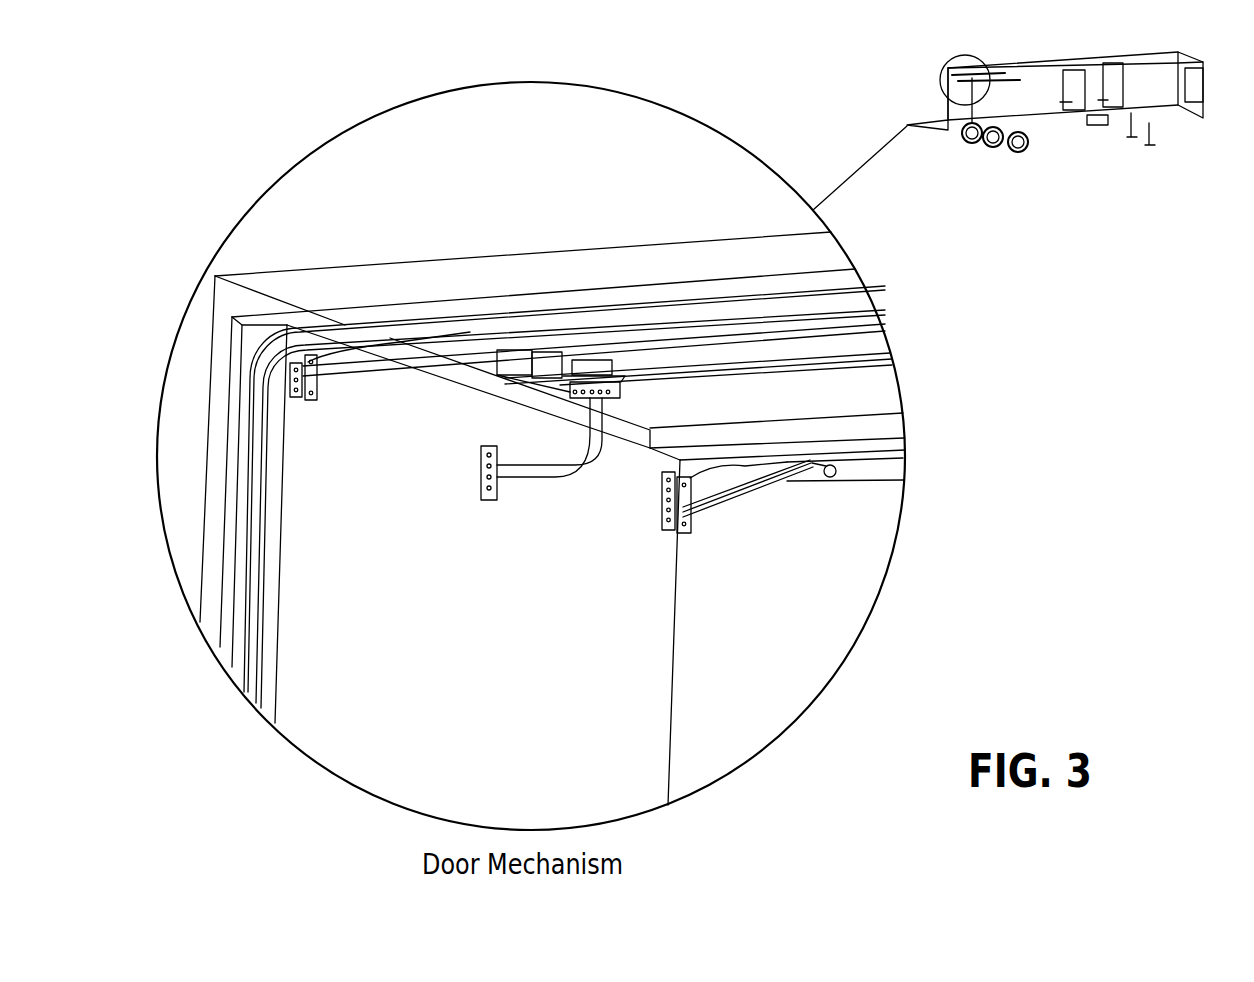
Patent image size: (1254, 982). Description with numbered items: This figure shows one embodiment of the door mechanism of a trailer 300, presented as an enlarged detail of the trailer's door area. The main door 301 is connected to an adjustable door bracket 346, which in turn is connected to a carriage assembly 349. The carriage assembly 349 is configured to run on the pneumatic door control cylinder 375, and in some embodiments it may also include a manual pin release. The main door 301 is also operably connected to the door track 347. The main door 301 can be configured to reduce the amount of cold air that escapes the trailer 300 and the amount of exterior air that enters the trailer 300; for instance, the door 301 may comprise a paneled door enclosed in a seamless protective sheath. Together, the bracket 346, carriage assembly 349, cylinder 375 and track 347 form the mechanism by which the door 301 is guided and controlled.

The trailer 300 is at (1162, 152).
The main door 301 is at (522, 658).
The adjustable door bracket 346 is at (483, 484).
The door track 347 is at (540, 327).
The carriage assembly 349 is at (622, 390).
The pneumatic door control cylinder 375 is at (743, 358).